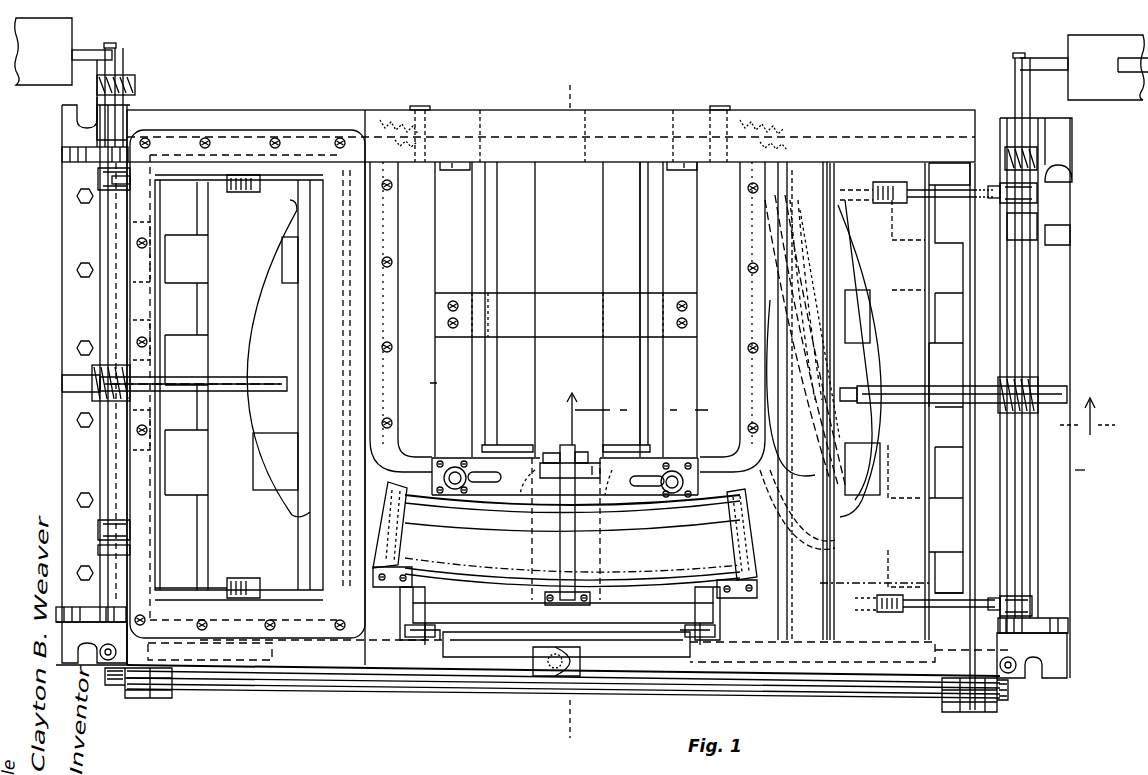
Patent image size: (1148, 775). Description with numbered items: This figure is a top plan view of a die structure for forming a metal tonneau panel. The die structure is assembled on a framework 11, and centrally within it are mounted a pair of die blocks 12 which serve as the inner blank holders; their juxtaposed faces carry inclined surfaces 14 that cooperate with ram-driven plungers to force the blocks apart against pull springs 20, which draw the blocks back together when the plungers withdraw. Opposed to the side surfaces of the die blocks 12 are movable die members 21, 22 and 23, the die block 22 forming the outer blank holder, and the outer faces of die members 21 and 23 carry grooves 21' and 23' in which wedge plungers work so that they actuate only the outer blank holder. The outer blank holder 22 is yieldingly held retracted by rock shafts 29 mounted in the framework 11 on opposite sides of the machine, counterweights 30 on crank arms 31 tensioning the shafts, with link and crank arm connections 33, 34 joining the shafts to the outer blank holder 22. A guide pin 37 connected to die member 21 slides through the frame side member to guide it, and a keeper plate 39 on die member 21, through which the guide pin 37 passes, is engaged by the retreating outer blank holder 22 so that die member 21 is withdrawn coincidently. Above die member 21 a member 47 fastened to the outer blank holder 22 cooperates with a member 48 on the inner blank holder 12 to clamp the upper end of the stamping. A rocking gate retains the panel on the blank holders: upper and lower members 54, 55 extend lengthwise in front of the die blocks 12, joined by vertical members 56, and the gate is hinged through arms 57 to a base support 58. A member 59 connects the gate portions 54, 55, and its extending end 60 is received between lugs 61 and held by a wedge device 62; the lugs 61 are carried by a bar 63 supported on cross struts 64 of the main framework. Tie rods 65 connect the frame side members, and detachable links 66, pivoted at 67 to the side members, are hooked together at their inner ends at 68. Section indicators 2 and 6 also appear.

The section line 2- 2 is at (773, 414).
The section line 6- 6 is at (574, 412).
The framework 11 is at (586, 463).
The die blocks 12 is at (420, 277).
The inclined surfaces 14 is at (615, 243).
The pull springs 20 is at (378, 118).
The movable die member 21 is at (565, 363).
The groove 21' is at (589, 388).
The outer blank holder 22 is at (928, 526).
The die member 23 is at (577, 387).
The groove 23' is at (621, 393).
The rock shafts 29 is at (100, 222).
The counterweights 30 is at (33, 80).
The crank arms 31 is at (85, 52).
The link connection 33 is at (225, 192).
The crank arm connection 34 is at (98, 177).
The guide pin 37 is at (216, 380).
The keeper plate 39 is at (868, 426).
The member 47 is at (800, 363).
The member 48 is at (760, 320).
The upper gate member 54 is at (462, 588).
The lower gate member 55 is at (484, 513).
The vertical members 56 is at (733, 545).
The arms 57 is at (398, 620).
The base support 58 is at (455, 625).
The gate member 59 is at (570, 560).
The extending end 60 is at (563, 450).
The lugs 61 is at (585, 440).
The wedge device 62 is at (592, 455).
The bar 63 is at (640, 466).
The cross struts 64 is at (440, 386).
The tie rods 65 is at (372, 693).
The detachable links 66 is at (485, 658).
The pivots 67 is at (118, 678).
The hook coupling 68 is at (560, 680).